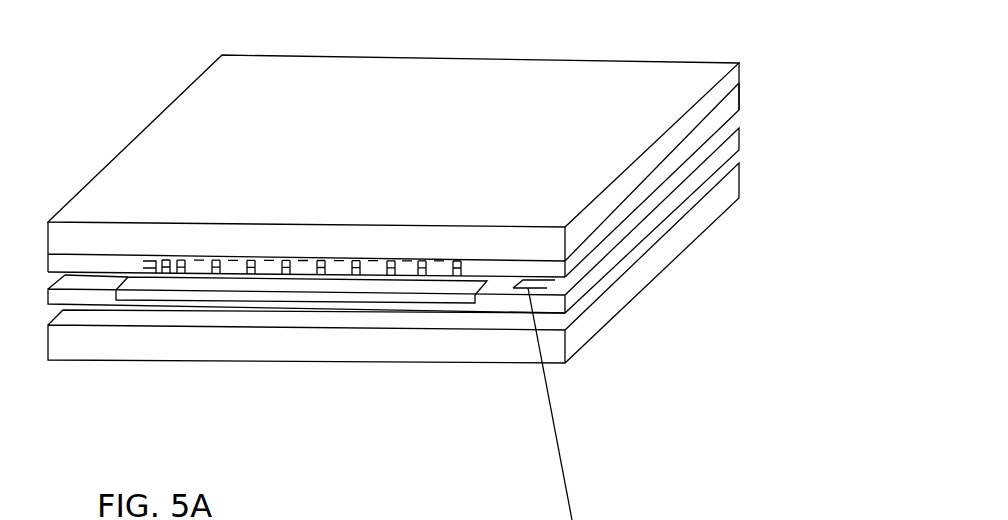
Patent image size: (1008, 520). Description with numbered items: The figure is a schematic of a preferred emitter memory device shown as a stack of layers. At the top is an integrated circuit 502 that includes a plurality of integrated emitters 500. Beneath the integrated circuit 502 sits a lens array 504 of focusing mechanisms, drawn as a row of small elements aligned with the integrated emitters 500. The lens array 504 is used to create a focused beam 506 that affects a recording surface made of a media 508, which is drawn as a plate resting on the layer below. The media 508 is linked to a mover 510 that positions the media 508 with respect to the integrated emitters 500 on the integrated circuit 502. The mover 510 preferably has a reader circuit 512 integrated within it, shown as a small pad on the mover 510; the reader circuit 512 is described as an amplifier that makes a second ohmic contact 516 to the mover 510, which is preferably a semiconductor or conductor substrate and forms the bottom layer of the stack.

The integrated emitters 500 is at (197, 258).
The integrated circuit 502 is at (741, 85).
The lens array 504 is at (741, 110).
The focused beam 506 is at (164, 262).
The media 508 is at (400, 292).
The mover 510 is at (741, 140).
The reader circuit 512 is at (547, 288).
The second ohmic contact 516 is at (728, 207).